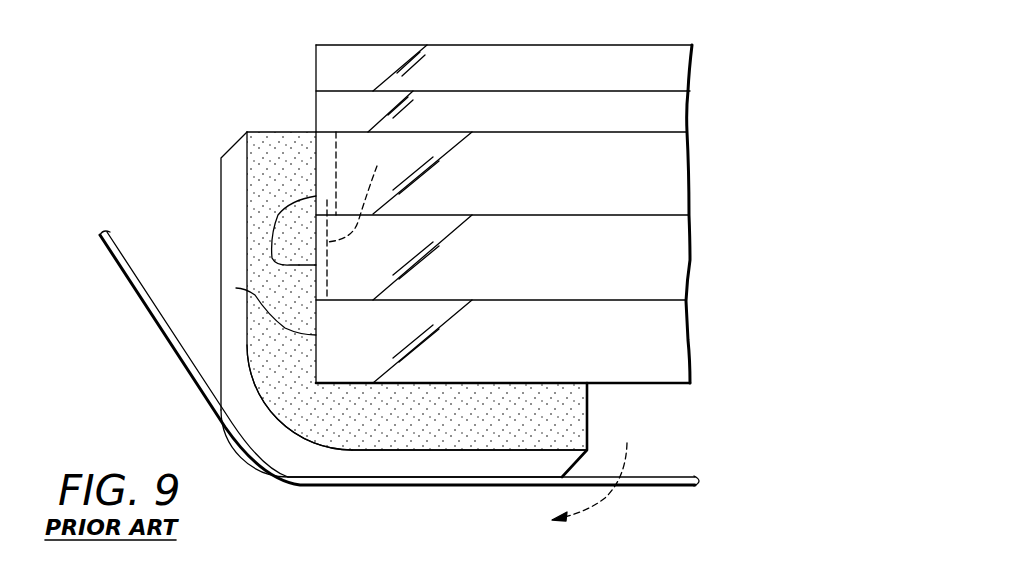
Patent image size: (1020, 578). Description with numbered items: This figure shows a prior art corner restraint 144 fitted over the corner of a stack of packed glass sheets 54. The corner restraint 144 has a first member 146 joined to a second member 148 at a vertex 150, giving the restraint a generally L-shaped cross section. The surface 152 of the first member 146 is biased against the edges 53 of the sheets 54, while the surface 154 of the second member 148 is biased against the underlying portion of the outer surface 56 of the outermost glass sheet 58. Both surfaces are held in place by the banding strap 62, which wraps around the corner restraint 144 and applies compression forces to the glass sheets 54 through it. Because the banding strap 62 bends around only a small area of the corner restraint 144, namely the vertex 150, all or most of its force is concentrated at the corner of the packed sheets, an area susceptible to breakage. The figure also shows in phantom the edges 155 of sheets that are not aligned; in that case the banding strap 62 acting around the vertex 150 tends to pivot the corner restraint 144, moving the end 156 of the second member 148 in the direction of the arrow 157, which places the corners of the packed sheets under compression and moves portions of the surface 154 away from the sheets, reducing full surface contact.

The corner restraint 144 is at (210, 120).
The first member 146 is at (265, 192).
The second member 148 is at (405, 433).
The vertex 150 is at (318, 382).
The surface 152 is at (316, 147).
The surface 154 is at (485, 383).
The edges 155 is at (337, 180).
The end 156 is at (587, 403).
The arrow 157 is at (598, 508).
The edges 53 is at (282, 268).
The sheets 54 is at (686, 72).
The outer surface 56 is at (677, 385).
The outermost glass sheet 58 is at (690, 352).
The banding strap 62 is at (160, 338).